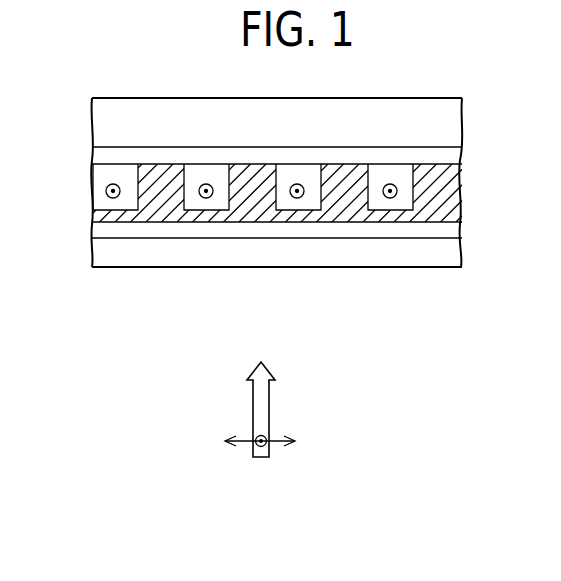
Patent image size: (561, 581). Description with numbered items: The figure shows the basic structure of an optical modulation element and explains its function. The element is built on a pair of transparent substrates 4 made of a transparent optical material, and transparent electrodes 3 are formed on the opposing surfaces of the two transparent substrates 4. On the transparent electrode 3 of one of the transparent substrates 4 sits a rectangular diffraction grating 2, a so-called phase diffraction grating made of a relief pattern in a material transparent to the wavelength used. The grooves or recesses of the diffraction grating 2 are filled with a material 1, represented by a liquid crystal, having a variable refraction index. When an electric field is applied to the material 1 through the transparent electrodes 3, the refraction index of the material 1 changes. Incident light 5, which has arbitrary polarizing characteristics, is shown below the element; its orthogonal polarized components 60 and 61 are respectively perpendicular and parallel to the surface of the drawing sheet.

The material having a variable refraction index 1 is at (103, 175).
The diffraction grating 2 is at (98, 216).
The transparent electrodes 3 is at (455, 156).
The transparent substrates 4 is at (455, 118).
The incident light 5 is at (265, 458).
The polarized component 60 is at (265, 437).
The polarized component 61 is at (277, 445).